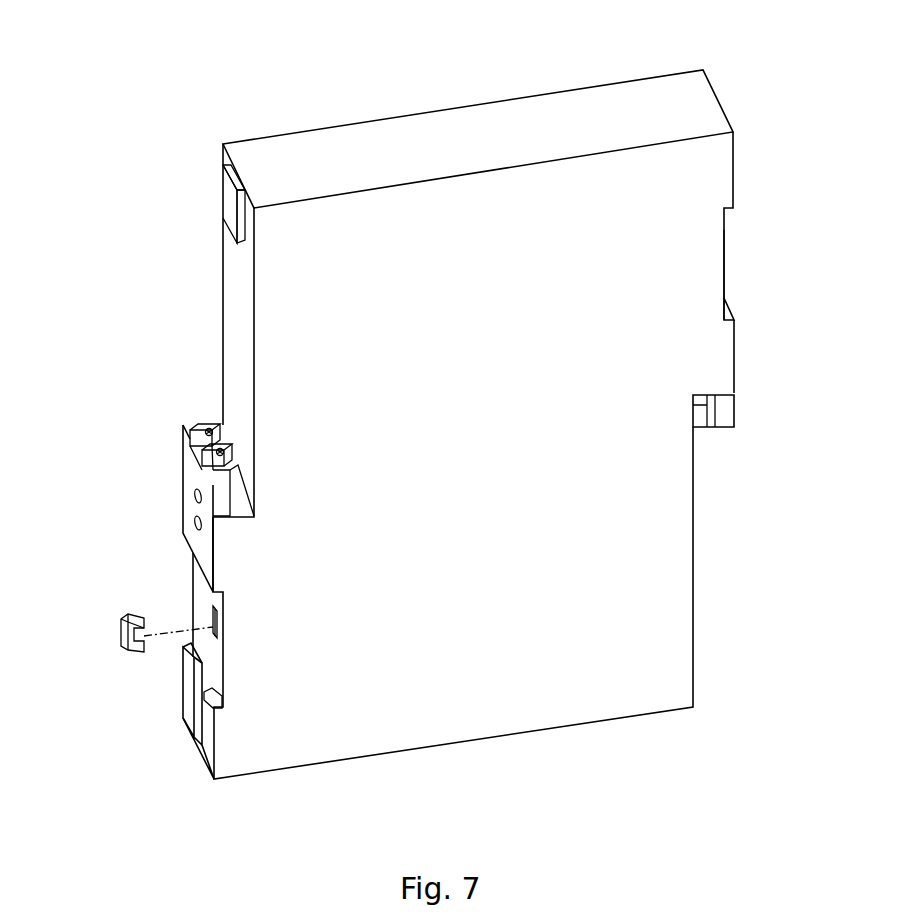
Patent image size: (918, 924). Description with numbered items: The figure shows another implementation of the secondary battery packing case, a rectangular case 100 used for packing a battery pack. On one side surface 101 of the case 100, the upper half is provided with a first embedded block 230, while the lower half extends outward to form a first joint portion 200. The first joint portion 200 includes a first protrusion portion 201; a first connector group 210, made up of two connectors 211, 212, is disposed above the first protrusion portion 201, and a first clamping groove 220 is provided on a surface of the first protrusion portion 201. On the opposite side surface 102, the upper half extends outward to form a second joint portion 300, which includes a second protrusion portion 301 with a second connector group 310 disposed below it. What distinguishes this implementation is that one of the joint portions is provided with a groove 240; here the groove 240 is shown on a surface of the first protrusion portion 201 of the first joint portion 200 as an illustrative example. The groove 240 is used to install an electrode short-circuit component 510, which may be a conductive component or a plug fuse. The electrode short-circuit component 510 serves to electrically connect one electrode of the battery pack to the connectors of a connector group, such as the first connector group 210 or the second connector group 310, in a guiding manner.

The case 100 is at (443, 90).
The side surface 101 is at (236, 303).
The side surface 102 is at (695, 567).
The first joint portion 200 is at (78, 348).
The first protrusion portion 201 is at (230, 573).
The first connector group 210 is at (134, 375).
The connector 211 is at (215, 452).
The connector 212 is at (203, 430).
The first clamping groove 220 is at (195, 700).
The first embedded block 230 is at (230, 203).
The groove 240 is at (218, 624).
The second joint portion 300 is at (774, 232).
The second protrusion portion 301 is at (713, 263).
The second connector group 310 is at (703, 423).
The electrode short-circuit component 510 is at (131, 616).